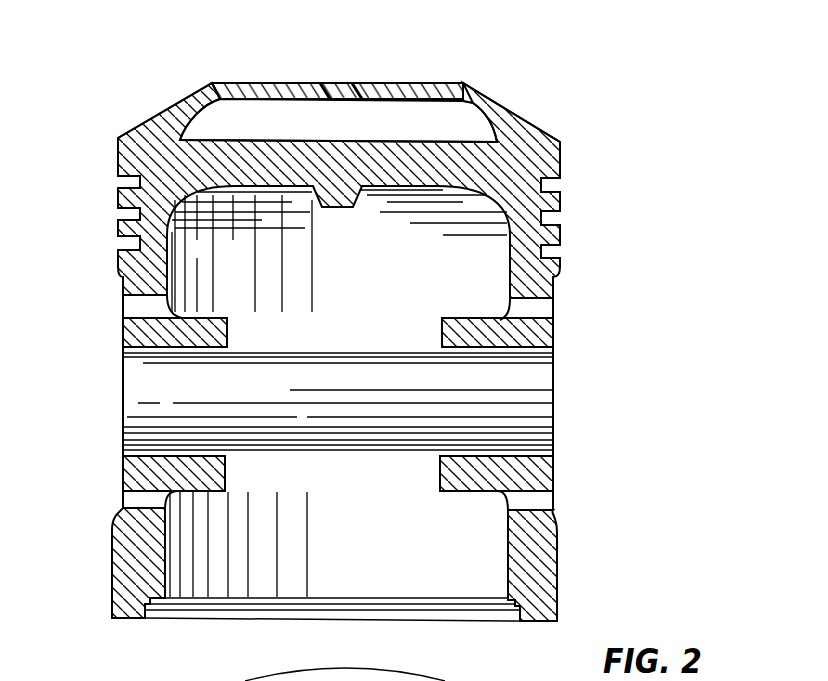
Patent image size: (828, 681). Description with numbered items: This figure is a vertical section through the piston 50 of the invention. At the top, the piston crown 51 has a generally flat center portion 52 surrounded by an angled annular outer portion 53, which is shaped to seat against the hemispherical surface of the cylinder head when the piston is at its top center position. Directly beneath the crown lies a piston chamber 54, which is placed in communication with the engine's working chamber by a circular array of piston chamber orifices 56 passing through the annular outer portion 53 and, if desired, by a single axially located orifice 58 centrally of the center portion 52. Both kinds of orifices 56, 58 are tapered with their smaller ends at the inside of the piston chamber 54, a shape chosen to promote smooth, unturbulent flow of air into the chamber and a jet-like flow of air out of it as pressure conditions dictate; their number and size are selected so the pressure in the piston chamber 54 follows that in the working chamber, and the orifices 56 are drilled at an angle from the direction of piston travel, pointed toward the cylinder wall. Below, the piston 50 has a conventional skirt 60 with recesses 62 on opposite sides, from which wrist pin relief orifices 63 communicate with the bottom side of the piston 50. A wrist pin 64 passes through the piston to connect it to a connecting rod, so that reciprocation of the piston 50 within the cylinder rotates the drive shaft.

The piston 50 is at (515, 178).
The piston crown 51 is at (462, 88).
The center portion 52 is at (276, 95).
The angled annular outer portion 53 is at (148, 125).
The piston chamber 54 is at (388, 112).
The piston chamber orifices 56 is at (202, 100).
The axially located orifice 58 is at (342, 95).
The piston skirt 60 is at (545, 552).
The recesses 62 is at (128, 332).
The wrist pin relief orifices 63 is at (135, 300).
The wrist pin 64 is at (525, 386).